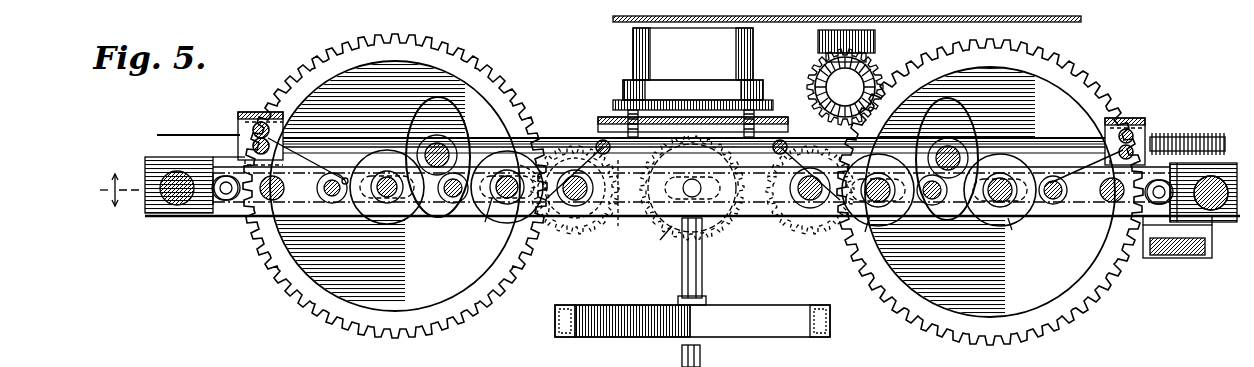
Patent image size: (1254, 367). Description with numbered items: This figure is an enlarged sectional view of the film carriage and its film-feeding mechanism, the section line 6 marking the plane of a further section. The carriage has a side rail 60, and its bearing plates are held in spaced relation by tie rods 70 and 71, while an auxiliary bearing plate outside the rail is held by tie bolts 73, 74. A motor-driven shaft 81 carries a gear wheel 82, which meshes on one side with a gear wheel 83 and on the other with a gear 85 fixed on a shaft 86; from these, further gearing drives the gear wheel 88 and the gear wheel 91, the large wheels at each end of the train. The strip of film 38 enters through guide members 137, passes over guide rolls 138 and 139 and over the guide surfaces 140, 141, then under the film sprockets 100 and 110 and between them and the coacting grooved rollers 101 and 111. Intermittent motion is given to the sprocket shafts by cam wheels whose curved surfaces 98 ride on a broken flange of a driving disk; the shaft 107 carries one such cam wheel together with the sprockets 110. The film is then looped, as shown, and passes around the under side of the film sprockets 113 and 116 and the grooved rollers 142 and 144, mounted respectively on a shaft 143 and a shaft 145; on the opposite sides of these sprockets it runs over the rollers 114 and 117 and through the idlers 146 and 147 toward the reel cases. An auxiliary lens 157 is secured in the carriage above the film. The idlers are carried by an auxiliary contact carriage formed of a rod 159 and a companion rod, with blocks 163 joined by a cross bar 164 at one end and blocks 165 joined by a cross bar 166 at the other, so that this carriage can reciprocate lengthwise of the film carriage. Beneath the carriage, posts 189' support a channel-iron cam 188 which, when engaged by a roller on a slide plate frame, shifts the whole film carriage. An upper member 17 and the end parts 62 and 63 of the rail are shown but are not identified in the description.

The section line 6 is at (1222, 236).
The frame bar 17 is at (1084, 26).
The strip of film 38 is at (1135, 98).
The rail 60 is at (150, 222).
The roller 62 is at (1211, 212).
The roller 63 is at (177, 206).
The tie rod 70 is at (1100, 218).
The tie rod 71 is at (270, 202).
The tie bolt 73 is at (1160, 206).
The tie bolt 74 is at (226, 202).
The shaft 81 is at (660, 240).
The gear wheel 82 is at (690, 198).
The gear wheel 83 is at (738, 224).
The gear 85 is at (560, 232).
The shaft 86 is at (649, 356).
The gear wheel 88 is at (1100, 300).
The gear wheel 91 is at (500, 98).
The curved surfaces 98 is at (192, 174).
The film sprockets 100 is at (838, 236).
The grooved rollers 101 is at (878, 226).
The shaft 107 is at (495, 225).
The film sprockets 110 is at (512, 224).
The grooved rollers 111 is at (484, 224).
The film sprockets 113 is at (1018, 222).
The grooved rollers 114 is at (1072, 226).
The film sprockets 116 is at (389, 226).
The grooved rollers 117 is at (330, 205).
The guide members 137 is at (622, 225).
The guide roll 138 is at (600, 130).
The guide roll 139 is at (810, 87).
The guide surface 140 is at (596, 232).
The guide surface 141 is at (808, 232).
The grooved rollers 142 is at (945, 130).
The shaft 143 is at (905, 226).
The grooved rollers 144 is at (435, 137).
The shaft 145 is at (452, 204).
The idlers 146 is at (1150, 138).
The idlers 147 is at (258, 112).
The auxiliary lens 157 is at (753, 62).
The rod 159 is at (1078, 148).
The blocks 163 is at (1135, 130).
The cross bar 164 is at (1112, 118).
The blocks 165 is at (248, 128).
The cross bar 166 is at (272, 112).
The cam 188 is at (738, 310).
The posts 189' is at (723, 261).